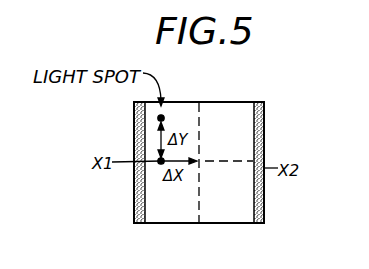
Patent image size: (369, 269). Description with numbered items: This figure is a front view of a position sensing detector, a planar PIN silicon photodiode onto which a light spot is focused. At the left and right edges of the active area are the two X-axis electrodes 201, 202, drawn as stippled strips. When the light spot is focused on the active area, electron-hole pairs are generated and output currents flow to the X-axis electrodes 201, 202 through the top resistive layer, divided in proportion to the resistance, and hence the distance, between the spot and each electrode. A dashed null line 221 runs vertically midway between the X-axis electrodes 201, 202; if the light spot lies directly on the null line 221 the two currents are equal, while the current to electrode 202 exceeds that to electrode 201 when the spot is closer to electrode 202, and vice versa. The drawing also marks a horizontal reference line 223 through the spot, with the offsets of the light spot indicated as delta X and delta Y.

The X-axis electrode 201 is at (134, 192).
The X-axis electrode 202 is at (264, 128).
The null line 221 is at (201, 124).
The horizontal reference line 223 is at (193, 167).